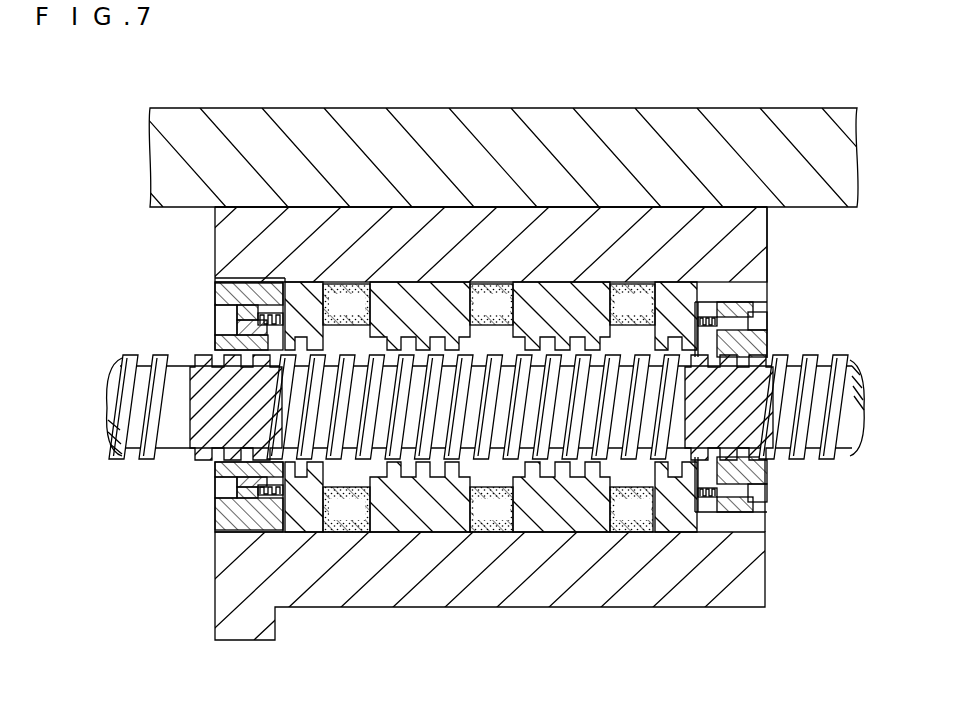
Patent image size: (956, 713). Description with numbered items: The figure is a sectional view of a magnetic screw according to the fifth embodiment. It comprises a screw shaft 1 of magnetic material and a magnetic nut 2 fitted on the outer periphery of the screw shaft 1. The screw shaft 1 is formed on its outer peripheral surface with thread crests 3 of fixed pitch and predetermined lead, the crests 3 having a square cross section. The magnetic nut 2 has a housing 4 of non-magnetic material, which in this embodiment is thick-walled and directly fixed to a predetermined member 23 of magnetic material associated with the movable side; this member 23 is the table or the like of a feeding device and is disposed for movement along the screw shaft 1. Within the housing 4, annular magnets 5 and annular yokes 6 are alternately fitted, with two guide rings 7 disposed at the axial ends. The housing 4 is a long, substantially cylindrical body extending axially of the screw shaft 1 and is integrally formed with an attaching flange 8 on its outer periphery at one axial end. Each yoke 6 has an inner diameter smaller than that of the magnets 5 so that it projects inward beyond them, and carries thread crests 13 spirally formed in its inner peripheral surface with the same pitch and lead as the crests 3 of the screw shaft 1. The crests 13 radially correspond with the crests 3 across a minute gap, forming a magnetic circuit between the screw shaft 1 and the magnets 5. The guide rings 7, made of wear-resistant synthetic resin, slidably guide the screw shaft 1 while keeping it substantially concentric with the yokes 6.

The screw shaft 1 is at (170, 332).
The magnetic nut 2 is at (605, 205).
The thread crests 3 is at (790, 372).
The housing 4 is at (480, 232).
The annular magnets 5 is at (350, 530).
The annular yokes 6 is at (307, 277).
The guide rings 7 is at (762, 326).
The attaching flange 8 is at (235, 628).
The thread crests 13 is at (415, 467).
The predetermined member 23 is at (735, 136).